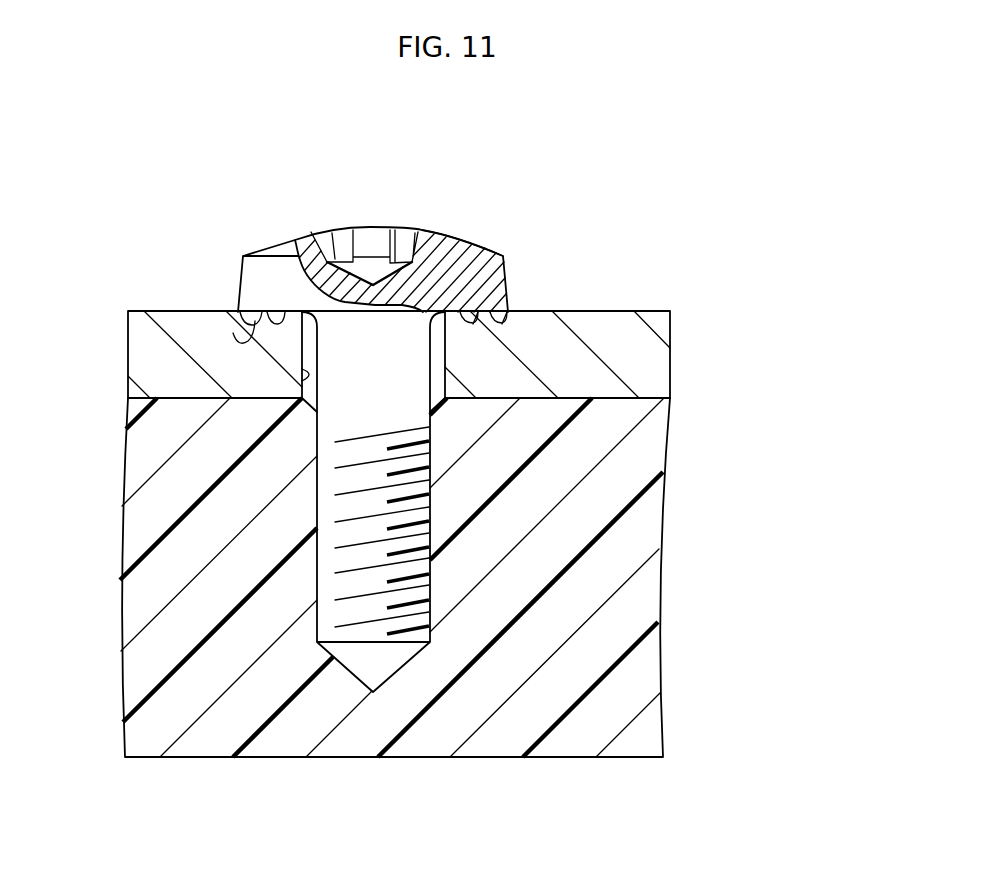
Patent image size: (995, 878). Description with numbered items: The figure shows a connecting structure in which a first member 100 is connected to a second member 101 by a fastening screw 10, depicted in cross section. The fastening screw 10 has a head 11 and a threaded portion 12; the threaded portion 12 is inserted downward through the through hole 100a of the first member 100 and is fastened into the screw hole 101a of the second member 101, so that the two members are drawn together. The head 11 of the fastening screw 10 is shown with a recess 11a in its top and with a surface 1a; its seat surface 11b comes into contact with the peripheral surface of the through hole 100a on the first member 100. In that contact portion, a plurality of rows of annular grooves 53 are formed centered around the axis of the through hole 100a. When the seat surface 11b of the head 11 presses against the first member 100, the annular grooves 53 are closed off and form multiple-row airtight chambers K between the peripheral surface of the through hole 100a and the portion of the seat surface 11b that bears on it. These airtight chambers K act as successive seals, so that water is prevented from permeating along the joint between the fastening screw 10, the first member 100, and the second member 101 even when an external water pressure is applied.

The fastening screw 10 is at (413, 433).
The head 11 is at (413, 243).
The driving recess 11a is at (375, 243).
The seat surface 11b is at (232, 333).
The head seating surface 1a is at (465, 287).
The threaded portion 12 is at (430, 538).
The annular grooves 53 is at (466, 321).
The airtight chambers K is at (473, 326).
The first member 100 is at (150, 361).
The through hole 100a is at (300, 383).
The second member 101 is at (357, 745).
The screw hole 101a is at (340, 497).